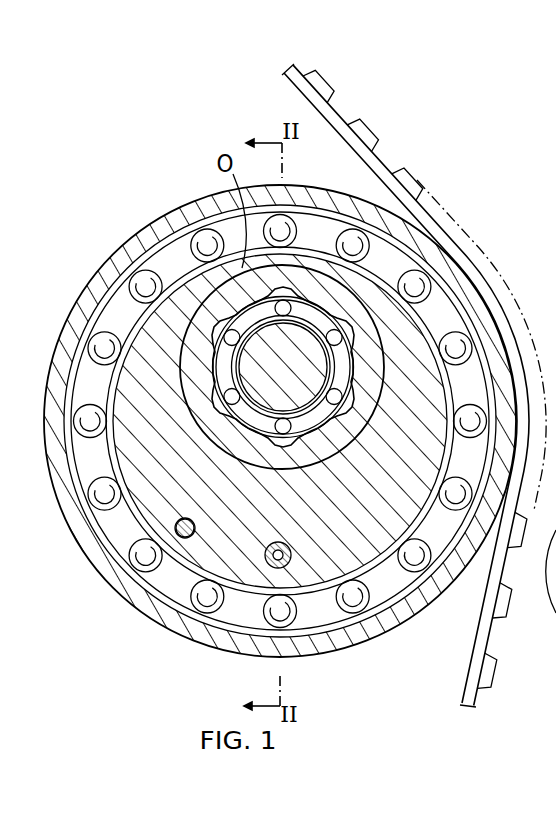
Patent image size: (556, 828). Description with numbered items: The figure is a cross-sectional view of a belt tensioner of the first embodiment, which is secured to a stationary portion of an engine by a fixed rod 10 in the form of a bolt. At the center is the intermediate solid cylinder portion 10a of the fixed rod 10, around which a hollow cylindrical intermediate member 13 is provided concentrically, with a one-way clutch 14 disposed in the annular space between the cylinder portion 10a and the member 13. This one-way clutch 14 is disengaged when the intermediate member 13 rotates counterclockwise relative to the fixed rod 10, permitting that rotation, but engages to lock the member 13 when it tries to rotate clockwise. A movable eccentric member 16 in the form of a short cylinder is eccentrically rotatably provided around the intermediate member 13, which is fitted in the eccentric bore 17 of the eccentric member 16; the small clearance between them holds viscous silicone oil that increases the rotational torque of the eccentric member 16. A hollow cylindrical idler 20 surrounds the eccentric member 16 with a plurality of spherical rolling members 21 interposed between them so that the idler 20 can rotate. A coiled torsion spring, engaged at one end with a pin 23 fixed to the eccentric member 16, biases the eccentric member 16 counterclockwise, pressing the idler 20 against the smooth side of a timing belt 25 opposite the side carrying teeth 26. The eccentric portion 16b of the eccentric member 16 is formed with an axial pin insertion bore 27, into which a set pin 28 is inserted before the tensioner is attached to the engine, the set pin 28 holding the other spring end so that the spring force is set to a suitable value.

The fixed rod 10 is at (236, 430).
The intermediate solid cylinder portion 10a is at (238, 362).
The intermediate member 13 is at (174, 231).
The one-way clutch 14 is at (214, 387).
The movable eccentric member 16 is at (148, 507).
The eccentric portion 16b is at (314, 630).
The eccentric bore 17 is at (331, 455).
The idler 20 is at (193, 214).
The spherical rolling members 21 is at (354, 226).
The pin 23 is at (270, 568).
The timing belt 25 is at (477, 640).
The teeth 26 is at (365, 132).
The pin insertion bore 27 is at (194, 524).
The set pin 28 is at (181, 538).